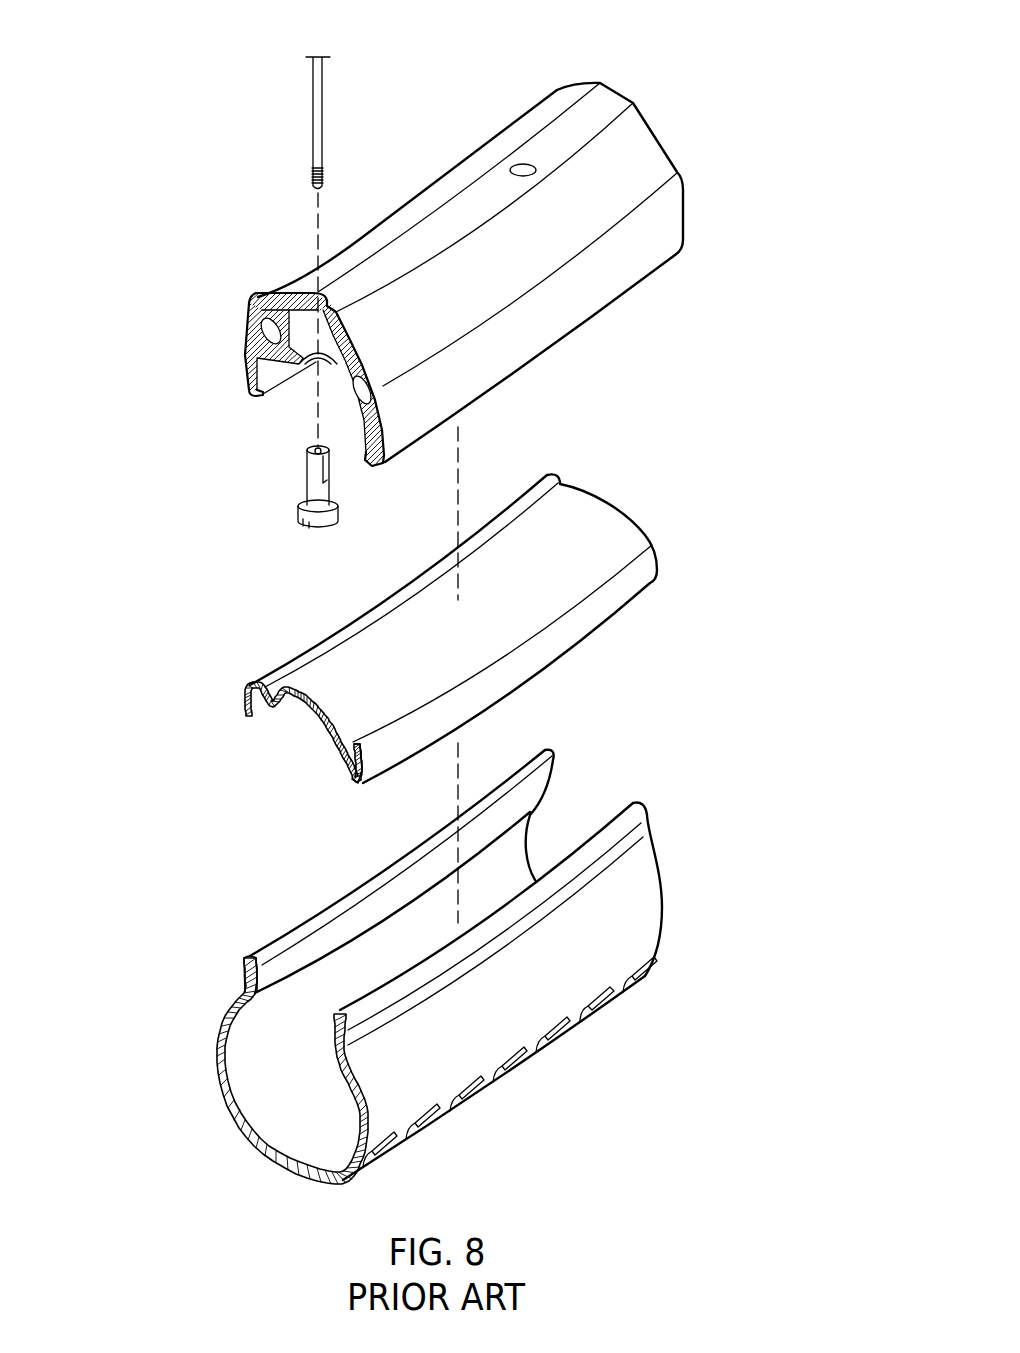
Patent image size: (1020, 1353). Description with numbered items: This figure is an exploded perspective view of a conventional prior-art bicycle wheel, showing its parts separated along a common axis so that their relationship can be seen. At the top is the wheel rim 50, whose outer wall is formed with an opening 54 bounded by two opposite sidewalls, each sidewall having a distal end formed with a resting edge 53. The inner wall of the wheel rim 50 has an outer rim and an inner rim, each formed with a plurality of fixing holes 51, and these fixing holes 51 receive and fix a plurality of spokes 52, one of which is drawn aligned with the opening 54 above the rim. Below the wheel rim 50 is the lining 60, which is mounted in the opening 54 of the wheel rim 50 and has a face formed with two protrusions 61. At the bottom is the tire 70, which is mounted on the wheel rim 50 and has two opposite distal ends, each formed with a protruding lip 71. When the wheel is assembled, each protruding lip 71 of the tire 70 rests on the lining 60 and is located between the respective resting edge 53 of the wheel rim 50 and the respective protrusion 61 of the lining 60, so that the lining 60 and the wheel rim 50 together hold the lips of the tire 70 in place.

The wheel rim 50 is at (663, 106).
The fixing holes 51 is at (518, 163).
The spokes 52 is at (315, 117).
The resting edge 53 is at (258, 393).
The opening 54 is at (298, 403).
The lining 60 is at (664, 530).
The protrusions 61 is at (340, 742).
The tire 70 is at (664, 846).
The protruding lip 71 is at (240, 960).